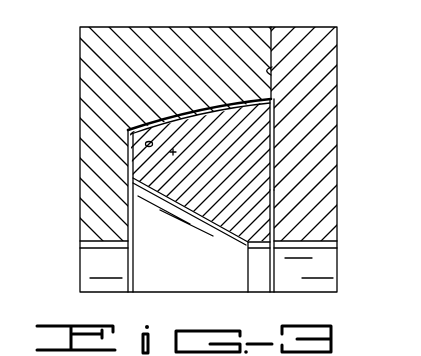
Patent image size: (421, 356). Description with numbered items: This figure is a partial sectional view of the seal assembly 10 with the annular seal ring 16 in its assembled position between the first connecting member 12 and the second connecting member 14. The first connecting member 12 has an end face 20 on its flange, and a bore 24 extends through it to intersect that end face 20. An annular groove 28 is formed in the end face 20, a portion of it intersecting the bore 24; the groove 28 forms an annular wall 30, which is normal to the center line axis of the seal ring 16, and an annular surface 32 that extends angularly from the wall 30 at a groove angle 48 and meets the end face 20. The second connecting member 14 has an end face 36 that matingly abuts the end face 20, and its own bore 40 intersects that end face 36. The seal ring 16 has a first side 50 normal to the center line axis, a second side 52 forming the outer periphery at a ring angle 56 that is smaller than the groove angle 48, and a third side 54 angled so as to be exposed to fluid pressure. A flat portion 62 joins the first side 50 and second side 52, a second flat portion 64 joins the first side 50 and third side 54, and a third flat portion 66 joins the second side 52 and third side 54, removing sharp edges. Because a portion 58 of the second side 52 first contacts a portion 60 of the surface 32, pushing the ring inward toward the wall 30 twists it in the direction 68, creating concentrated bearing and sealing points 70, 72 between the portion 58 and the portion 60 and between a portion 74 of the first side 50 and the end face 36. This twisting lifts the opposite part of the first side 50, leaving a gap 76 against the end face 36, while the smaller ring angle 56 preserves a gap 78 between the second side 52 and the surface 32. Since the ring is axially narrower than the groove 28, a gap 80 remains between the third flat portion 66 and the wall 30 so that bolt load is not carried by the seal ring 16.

The seal assembly 10 is at (244, 21).
The first connecting member 12 is at (88, 43).
The second connecting member 14 is at (322, 72).
The annular seal ring 16 is at (202, 253).
The end face 20 is at (279, 52).
The bore 24 is at (93, 247).
The annular groove 28 is at (130, 163).
The annular wall 30 is at (128, 208).
The annular surface 32 is at (252, 95).
The end face 36 is at (273, 73).
The bore 40 is at (311, 249).
The groove angle 48 is at (143, 122).
The first side 50 is at (276, 146).
The second side 52 is at (192, 122).
The third side 54 is at (168, 198).
The ring angle 56 is at (176, 152).
The portion of the second side 58 is at (151, 140).
The portion of the surface 60 is at (161, 119).
The flat portion 62 is at (272, 100).
The second flat portion 64 is at (262, 243).
The third flat portion 66 is at (146, 144).
The direction 68 is at (243, 202).
The bearing and sealing point 70 is at (128, 128).
The bearing and sealing point 72 is at (281, 241).
The portion of the first side 74 is at (276, 203).
The gap 76 is at (276, 123).
The gap 78 is at (228, 110).
The gap 80 is at (128, 185).